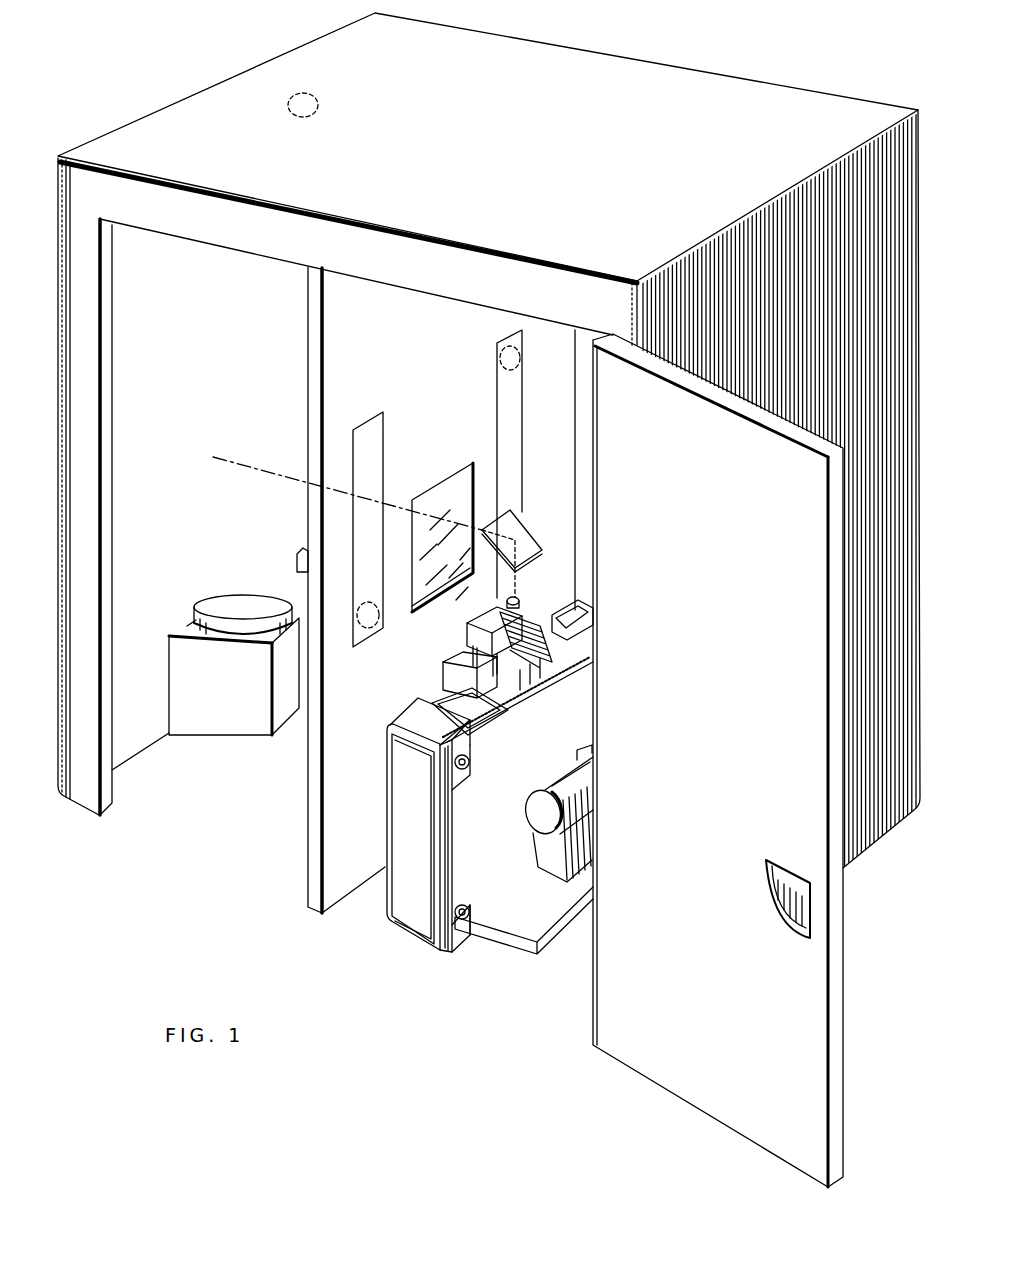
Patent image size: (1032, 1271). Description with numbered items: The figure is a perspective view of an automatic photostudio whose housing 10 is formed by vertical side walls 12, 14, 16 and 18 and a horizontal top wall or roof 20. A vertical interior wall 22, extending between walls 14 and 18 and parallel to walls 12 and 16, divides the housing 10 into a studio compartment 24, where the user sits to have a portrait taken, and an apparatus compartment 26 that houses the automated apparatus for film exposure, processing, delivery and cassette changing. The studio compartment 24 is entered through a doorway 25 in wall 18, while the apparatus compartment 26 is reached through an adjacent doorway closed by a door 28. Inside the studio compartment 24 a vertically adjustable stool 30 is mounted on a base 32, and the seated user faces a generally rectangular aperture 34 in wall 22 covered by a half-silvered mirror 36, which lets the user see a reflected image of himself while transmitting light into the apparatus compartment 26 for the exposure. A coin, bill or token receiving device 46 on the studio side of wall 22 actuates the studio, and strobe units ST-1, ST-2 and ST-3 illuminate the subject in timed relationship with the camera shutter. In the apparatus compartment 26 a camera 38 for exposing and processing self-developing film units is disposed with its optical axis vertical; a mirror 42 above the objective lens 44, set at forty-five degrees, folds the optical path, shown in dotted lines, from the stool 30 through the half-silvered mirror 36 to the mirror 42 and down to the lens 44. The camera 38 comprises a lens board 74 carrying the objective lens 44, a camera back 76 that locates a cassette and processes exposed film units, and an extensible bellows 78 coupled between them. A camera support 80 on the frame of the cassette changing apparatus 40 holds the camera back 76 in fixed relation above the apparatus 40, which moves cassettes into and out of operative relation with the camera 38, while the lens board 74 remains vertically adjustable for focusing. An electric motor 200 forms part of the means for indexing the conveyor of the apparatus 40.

The housing 10 is at (745, 66).
The vertical side wall 12 is at (895, 328).
The vertical side wall 14 is at (925, 279).
The vertical side wall 16 is at (146, 742).
The vertical side wall 18 is at (85, 797).
The top wall 20 is at (659, 76).
The vertical interior wall 22 is at (311, 862).
The studio compartment 24 is at (181, 312).
The doorway 25 is at (108, 805).
The apparatus compartment 26 is at (427, 368).
The door 28 is at (688, 1073).
The vertically adjustable stool 30 is at (235, 600).
The base 32 is at (178, 664).
The aperture 34 is at (476, 473).
The half-silvered mirror 36 is at (430, 495).
The camera 38 is at (534, 590).
The cassette changing apparatus 40 is at (408, 877).
The mirror 42 is at (526, 537).
The objective lens 44 is at (506, 600).
The receiving device 46 is at (302, 546).
The lens board 74 is at (533, 606).
The camera back 76 is at (560, 695).
The extensible bellows 78 is at (536, 621).
The camera support 80 is at (444, 671).
The electric motor 200 is at (528, 812).
The strobe unit ST-1 is at (366, 630).
The strobe unit ST-2 is at (518, 362).
The strobe unit ST-3 is at (312, 114).